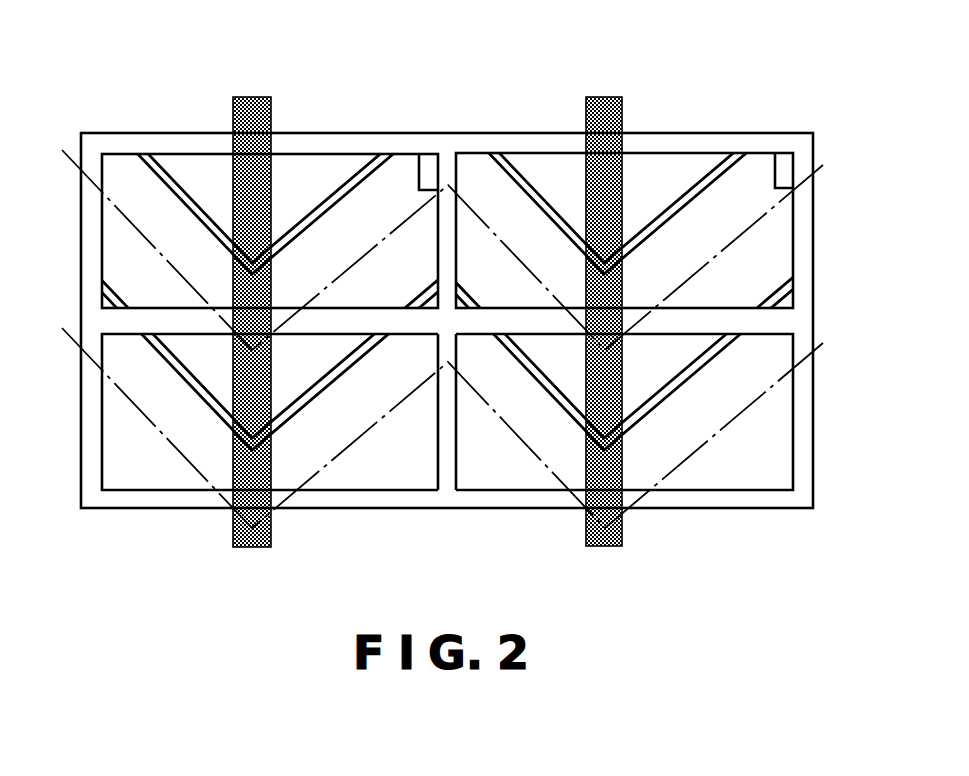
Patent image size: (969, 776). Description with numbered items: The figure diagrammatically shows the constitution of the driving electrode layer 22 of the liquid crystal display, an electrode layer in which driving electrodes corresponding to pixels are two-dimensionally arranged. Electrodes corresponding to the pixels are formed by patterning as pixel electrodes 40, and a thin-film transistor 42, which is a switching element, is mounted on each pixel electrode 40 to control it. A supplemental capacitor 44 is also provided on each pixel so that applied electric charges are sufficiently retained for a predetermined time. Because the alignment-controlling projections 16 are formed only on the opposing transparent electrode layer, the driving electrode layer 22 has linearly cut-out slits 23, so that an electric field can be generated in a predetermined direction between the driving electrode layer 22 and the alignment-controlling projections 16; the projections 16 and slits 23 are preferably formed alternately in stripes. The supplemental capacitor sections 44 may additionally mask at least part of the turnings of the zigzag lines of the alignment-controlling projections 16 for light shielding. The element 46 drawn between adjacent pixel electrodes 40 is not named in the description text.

The driving electrode layer 22 is at (445, 79).
The supplemental capacitor 44 is at (252, 110).
The thin-film transistor 42 is at (783, 170).
The partition wall 46 is at (447, 467).
The pixel electrode 40 is at (497, 463).
The slit 23 is at (677, 390).
The alignment-controlling projection 16 is at (738, 413).